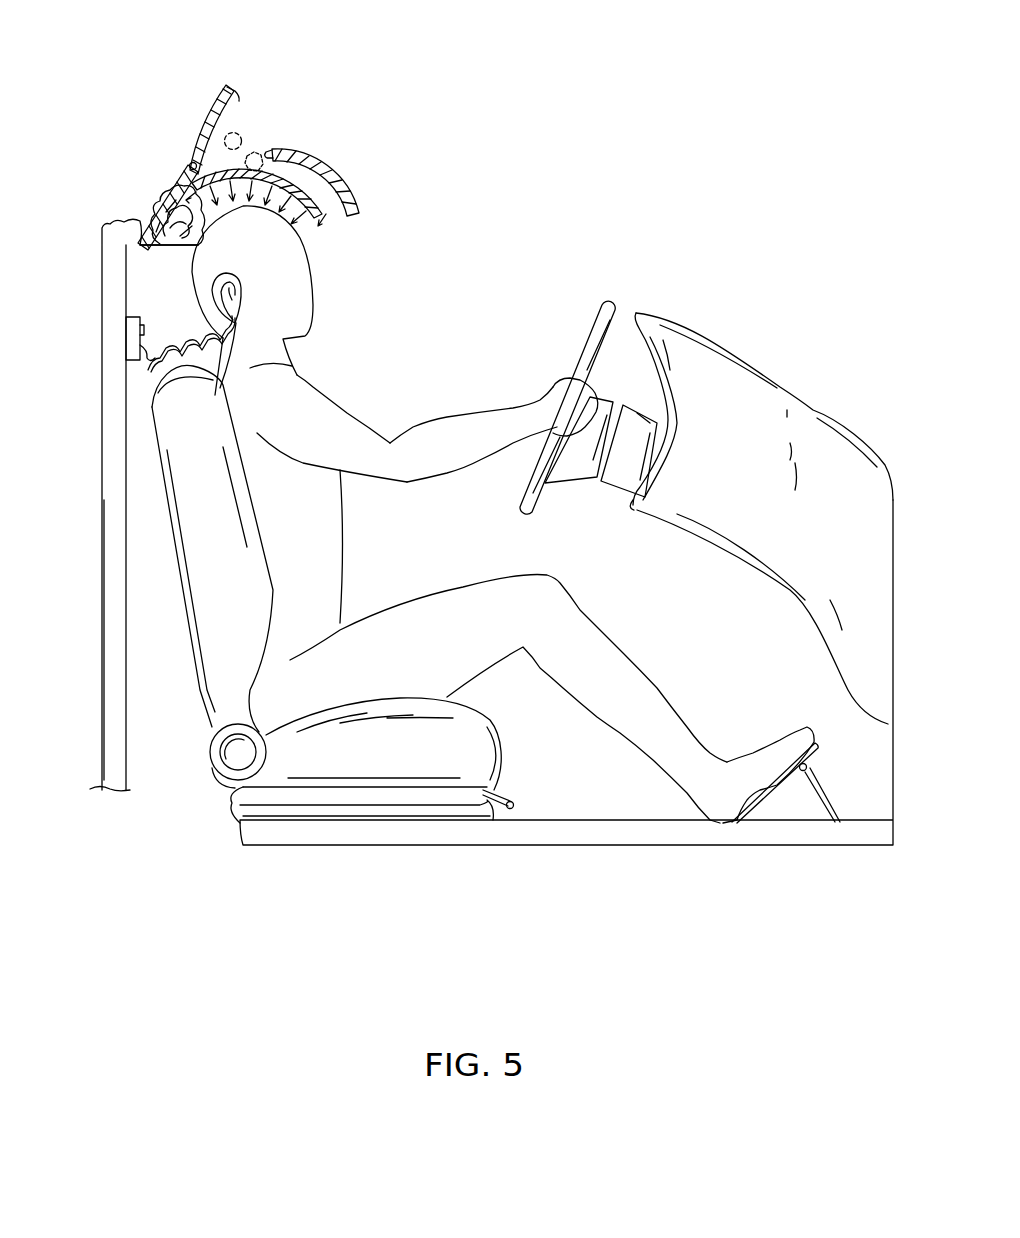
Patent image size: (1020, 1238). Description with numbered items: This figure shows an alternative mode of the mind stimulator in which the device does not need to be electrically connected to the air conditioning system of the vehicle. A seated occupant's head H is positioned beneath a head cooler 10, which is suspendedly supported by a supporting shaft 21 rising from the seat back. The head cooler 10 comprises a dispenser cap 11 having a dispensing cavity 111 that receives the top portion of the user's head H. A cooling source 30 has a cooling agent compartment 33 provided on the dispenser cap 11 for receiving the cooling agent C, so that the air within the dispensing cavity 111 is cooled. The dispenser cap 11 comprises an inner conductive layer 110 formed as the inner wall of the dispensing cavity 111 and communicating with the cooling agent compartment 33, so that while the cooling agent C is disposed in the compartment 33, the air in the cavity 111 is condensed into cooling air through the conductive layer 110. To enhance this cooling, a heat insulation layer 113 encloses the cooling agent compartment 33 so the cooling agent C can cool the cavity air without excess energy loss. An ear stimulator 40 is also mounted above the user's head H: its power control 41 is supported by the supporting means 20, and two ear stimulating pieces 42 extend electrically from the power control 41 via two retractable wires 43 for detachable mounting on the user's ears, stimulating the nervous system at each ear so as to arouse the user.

The head cooler 10 is at (322, 146).
The dispenser cap 11 is at (436, 170).
The supporting means 20 is at (82, 300).
The supporting shaft 21 is at (103, 494).
The cooling source 30 is at (352, 86).
The cooling agent compartment 33 is at (288, 176).
The ear stimulator 40 is at (145, 365).
The power control 41 is at (126, 321).
The ear stimulating pieces 42 is at (146, 372).
The retractable wires 43 is at (138, 348).
The inner conductive layer 110 is at (318, 224).
The dispensing cavity 111 is at (169, 274).
The heat insulation layer 113 is at (343, 200).
The cooling agent C is at (270, 133).
The user's head H is at (250, 272).